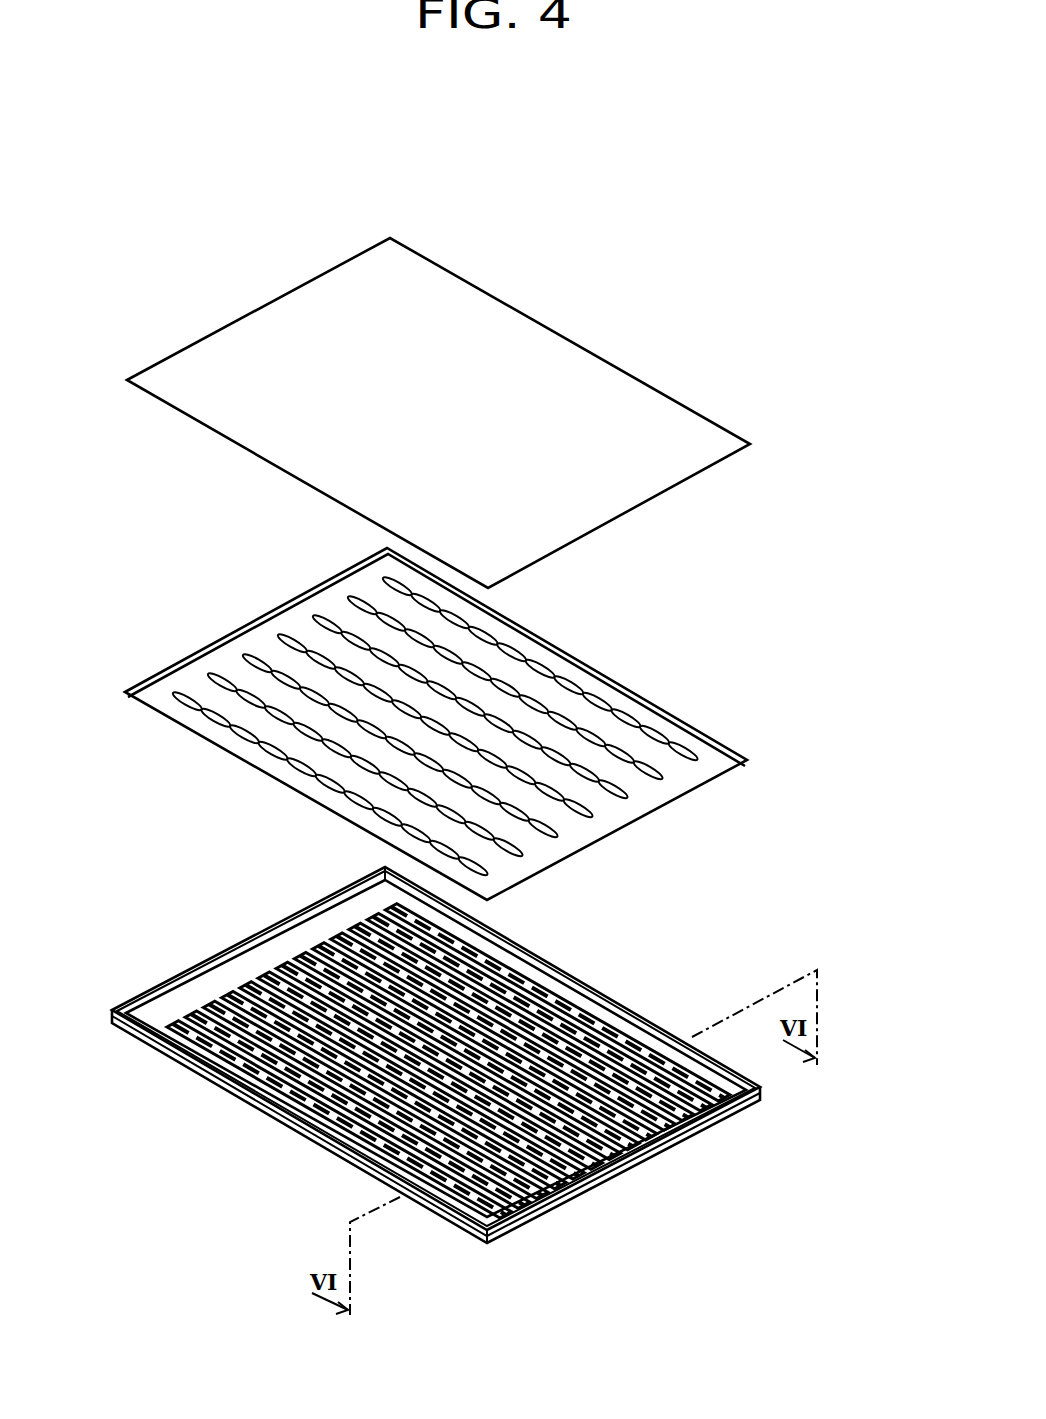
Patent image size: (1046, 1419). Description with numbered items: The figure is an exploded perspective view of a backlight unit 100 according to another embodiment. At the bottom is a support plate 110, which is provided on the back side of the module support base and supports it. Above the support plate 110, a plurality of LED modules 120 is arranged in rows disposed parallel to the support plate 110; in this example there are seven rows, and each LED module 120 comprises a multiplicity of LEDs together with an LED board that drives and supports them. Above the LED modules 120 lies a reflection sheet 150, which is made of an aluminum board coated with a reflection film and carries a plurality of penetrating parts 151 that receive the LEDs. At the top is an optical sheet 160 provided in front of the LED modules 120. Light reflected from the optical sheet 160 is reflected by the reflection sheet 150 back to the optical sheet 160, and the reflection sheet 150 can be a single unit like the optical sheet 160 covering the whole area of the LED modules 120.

The backlight unit 100 is at (188, 252).
The support plate 110 is at (665, 1145).
The LED module 120 is at (602, 1170).
The reflection sheet 150 is at (690, 722).
The penetrating parts 151 is at (662, 778).
The optical sheet 160 is at (690, 410).